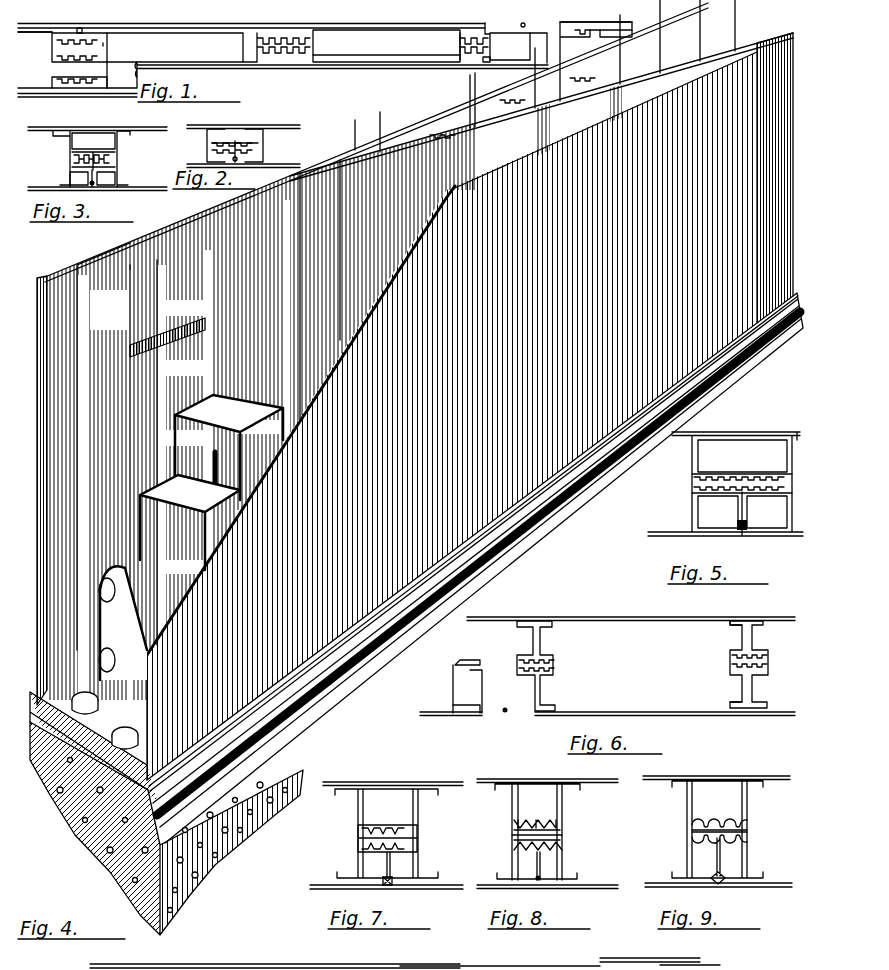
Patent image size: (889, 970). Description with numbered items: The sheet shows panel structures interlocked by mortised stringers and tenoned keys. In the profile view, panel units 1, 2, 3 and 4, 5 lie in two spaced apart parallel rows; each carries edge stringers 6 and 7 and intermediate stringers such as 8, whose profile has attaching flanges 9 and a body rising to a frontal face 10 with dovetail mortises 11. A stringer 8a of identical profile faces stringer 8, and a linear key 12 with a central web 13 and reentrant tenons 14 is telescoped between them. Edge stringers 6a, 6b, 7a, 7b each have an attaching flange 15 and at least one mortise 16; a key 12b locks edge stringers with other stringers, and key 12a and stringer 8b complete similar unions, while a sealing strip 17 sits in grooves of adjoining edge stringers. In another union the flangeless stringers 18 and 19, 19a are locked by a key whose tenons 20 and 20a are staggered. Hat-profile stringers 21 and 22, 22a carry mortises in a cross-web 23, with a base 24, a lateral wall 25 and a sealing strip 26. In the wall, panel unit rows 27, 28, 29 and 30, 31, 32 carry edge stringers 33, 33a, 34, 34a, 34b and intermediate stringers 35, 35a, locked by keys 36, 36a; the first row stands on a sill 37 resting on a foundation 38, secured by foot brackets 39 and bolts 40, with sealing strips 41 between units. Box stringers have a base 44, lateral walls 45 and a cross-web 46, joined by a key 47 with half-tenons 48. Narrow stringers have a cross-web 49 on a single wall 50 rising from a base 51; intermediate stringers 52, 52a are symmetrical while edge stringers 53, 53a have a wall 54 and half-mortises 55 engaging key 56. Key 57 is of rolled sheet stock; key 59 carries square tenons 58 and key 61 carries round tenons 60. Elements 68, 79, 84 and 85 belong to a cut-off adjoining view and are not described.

In FIG. 1, the panel unit 1 is at (42, 24).
In FIG. 1, the panel unit 2 is at (222, 24).
In FIG. 1, the panel unit 3 is at (598, 22).
In FIG. 1, the panel unit 4 is at (381, 69).
In FIG. 1, the panel unit 5 is at (516, 69).
In FIG. 1, the edge stringer 6 is at (104, 32).
In FIG. 1, the edge stringer 6a is at (559, 29).
In FIG. 1, the edge stringer 6b is at (475, 59).
In FIG. 1, the edge stringer 7 is at (446, 37).
In FIG. 1, the edge stringer 7a is at (50, 34).
In FIG. 1, the edge stringer 7b is at (490, 42).
In FIG. 1, the intermediate stringer 8 is at (325, 44).
In FIG. 1, the intermediate stringer 8a is at (328, 58).
In FIG. 1, the intermediate stringer 8b is at (52, 88).
In FIG. 1, the attaching flange 9 is at (135, 78).
In FIG. 1, the frontal face 10 is at (107, 76).
In FIG. 1, the mortise 11 is at (63, 78).
In FIG. 1, the linear key 12 is at (258, 50).
In FIG. 1, the tenoned key 12a is at (55, 55).
In FIG. 1, the tenoned key 12b is at (460, 45).
In FIG. 1, the central web 13 is at (110, 44).
In FIG. 1, the tenon 14 is at (90, 58).
In FIG. 1, the attaching flange 15 is at (597, 32).
In FIG. 1, the mortise 16 is at (566, 38).
In FIG. 1, the sealing strip 17 is at (521, 25).
In FIG. 2, the stringer 18 is at (263, 131).
In FIG. 2, the stringer 19 is at (208, 148).
In FIG. 2, the stringer 19a is at (268, 153).
In FIG. 2, the tenon 20 is at (222, 156).
In FIG. 2, the tenon 20a is at (217, 141).
In FIG. 3, the stringer 21 is at (60, 132).
In FIG. 3, the edge stringer 22 is at (70, 175).
In FIG. 3, the edge stringer 22a is at (115, 178).
In FIG. 3, the cross-web 23 is at (85, 135).
In FIG. 3, the base 24 is at (113, 189).
In FIG. 3, the lateral wall 25 is at (115, 158).
In FIG. 3, the sealing strip 26 is at (90, 185).
In FIG. 4, the panel unit 27 is at (64, 276).
In FIG. 4, the panel unit 28 is at (411, 128).
In FIG. 4, the panel unit 29 is at (670, 20).
In FIG. 4, the panel unit 30 is at (148, 706).
In FIG. 4, the panel unit 31 is at (372, 324).
In FIG. 4, the panel unit 32 is at (792, 84).
In FIG. 4, the edge stringer 33 is at (190, 254).
In FIG. 4, the edge stringer 33a is at (175, 510).
In FIG. 4, the edge stringer 34 is at (657, 46).
In FIG. 4, the edge stringer 34a is at (123, 270).
In FIG. 4, the edge stringer 34b is at (199, 422).
In FIG. 4, the intermediate stringer 35 is at (326, 184).
In FIG. 4, the intermediate stringer 35a is at (515, 106).
In FIG. 4, the tenoned key 36 is at (350, 206).
In FIG. 4, the tenoned key 36a is at (200, 320).
In FIG. 4, the sill 37 is at (526, 548).
In FIG. 4, the foundation 38 is at (308, 756).
In FIG. 4, the foot bracket 39 is at (109, 614).
In FIG. 4, the bolt 40 is at (106, 720).
In FIG. 4, the sealing strip 41 is at (212, 468).
In FIG. 5, the base 44 is at (730, 436).
In FIG. 5, the lateral wall 45 is at (692, 454).
In FIG. 5, the cross-web 46 is at (736, 474).
In FIG. 5, the interlocking key 47 is at (692, 490).
In FIG. 5, the half-tenon 48 is at (692, 475).
In FIG. 6, the cross-web 49 is at (740, 648).
In FIG. 6, the wall 50 is at (756, 637).
In FIG. 6, the base 51 is at (732, 628).
In FIG. 6, the intermediate stringer 52 is at (730, 656).
In FIG. 6, the intermediate stringer 52a is at (730, 704).
In FIG. 6, the edge stringer 53 is at (466, 702).
In FIG. 6, the edge stringer 53a is at (554, 675).
In FIG. 6, the supporting wall 54 is at (468, 680).
In FIG. 6, the half-mortise 55 is at (460, 665).
In FIG. 6, the key 56 is at (553, 664).
In FIG. 7, the key 57 is at (417, 836).
In FIG. 8, the tenon 58 is at (553, 827).
In FIG. 8, the key 59 is at (555, 840).
In FIG. 9, the tenon 60 is at (705, 822).
In FIG. 9, the key 61 is at (744, 835).
In FIG. 9, the rail 68 is at (168, 957).
In FIG. 9, the rail 79 is at (398, 957).
In FIG. 9, the rail 84 is at (679, 958).
In FIG. 9, the connector 85 is at (650, 960).